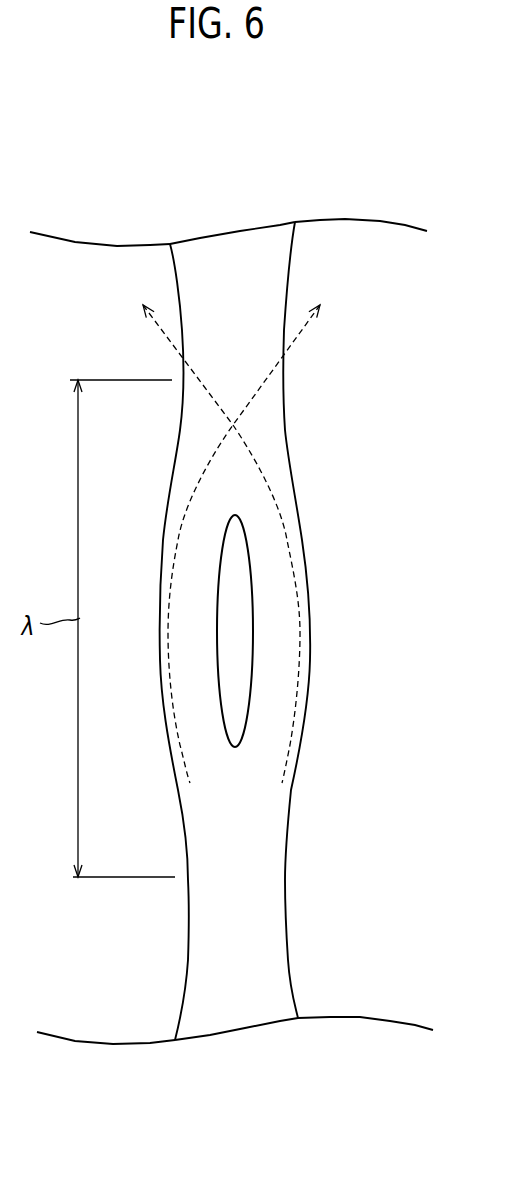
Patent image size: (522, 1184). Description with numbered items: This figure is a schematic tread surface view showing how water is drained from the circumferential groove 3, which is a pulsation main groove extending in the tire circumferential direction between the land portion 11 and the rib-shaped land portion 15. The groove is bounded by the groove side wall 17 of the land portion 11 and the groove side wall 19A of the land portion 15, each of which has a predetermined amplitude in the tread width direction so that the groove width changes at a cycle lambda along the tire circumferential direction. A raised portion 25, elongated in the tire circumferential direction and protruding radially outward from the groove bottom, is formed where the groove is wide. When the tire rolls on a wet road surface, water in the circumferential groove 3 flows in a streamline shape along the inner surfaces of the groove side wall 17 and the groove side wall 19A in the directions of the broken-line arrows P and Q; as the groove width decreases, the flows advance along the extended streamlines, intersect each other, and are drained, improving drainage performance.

The circumferential groove 3 is at (239, 590).
The land portion 11 is at (91, 272).
The land portion 15 is at (368, 247).
The groove side wall 17 is at (180, 262).
The groove side wall 19A is at (282, 255).
The raised portion 25 is at (240, 643).
The arrow P is at (295, 333).
The arrow Q is at (287, 525).